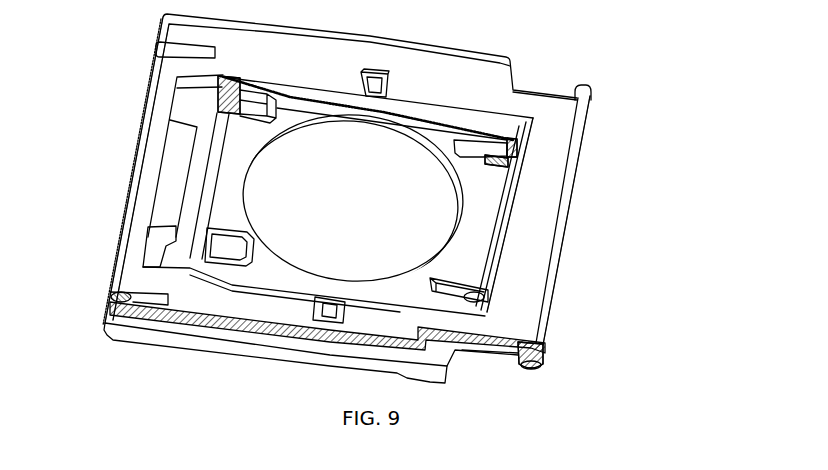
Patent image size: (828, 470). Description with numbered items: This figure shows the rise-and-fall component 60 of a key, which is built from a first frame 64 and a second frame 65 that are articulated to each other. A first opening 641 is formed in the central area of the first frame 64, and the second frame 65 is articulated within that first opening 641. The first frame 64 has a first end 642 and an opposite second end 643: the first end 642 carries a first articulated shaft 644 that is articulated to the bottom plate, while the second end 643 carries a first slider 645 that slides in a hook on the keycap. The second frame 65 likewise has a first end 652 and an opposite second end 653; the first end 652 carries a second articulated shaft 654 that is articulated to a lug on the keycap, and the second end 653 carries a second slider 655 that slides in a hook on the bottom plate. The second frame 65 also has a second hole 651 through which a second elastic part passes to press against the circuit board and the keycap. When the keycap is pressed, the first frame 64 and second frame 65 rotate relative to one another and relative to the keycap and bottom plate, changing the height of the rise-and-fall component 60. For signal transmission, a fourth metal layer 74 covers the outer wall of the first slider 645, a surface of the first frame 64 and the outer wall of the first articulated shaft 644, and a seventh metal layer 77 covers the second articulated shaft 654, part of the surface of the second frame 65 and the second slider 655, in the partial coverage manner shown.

The rise-and-fall component 60 is at (372, 198).
The first frame 64 is at (365, 198).
The first opening 641 is at (192, 183).
The first end of the first frame 642 is at (147, 111).
The second end of the first frame 643 is at (570, 212).
The first articulated shaft 644 is at (158, 49).
The first slider 645 is at (594, 92).
The second frame 65 is at (348, 196).
The second hole 651 is at (440, 200).
The first end of the second frame 652 is at (197, 208).
The second end of the second frame 653 is at (503, 243).
The second articulated shaft 654 is at (202, 238).
The second slider 655 is at (475, 293).
The fourth metal layer 74 is at (545, 354).
The seventh metal layer 77 is at (508, 162).